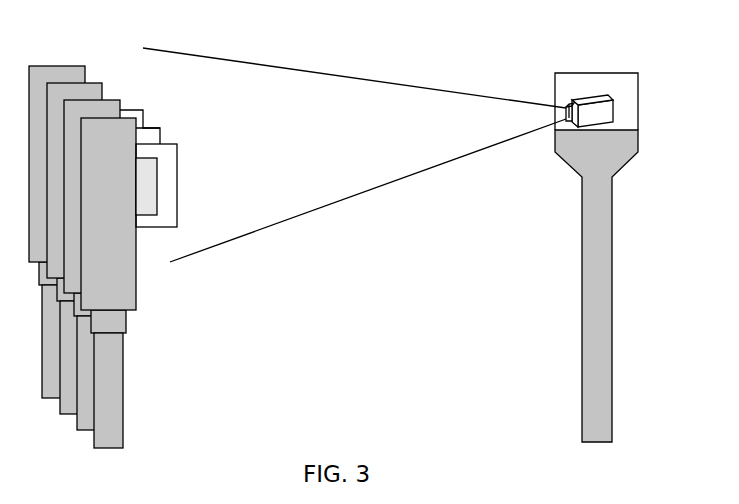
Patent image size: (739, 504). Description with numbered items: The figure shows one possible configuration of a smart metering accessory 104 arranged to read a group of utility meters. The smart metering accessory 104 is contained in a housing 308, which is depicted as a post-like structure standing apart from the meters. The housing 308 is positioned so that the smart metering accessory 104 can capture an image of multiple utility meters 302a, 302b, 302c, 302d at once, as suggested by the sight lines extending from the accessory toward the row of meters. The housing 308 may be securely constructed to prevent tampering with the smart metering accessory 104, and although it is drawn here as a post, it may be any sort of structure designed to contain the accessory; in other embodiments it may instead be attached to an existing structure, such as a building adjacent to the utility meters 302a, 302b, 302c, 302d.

The utility meter 302a is at (121, 118).
The utility meter 302b is at (103, 100).
The utility meter 302c is at (87, 83).
The utility meter 302d is at (70, 66).
The smart metering accessory 104 is at (605, 113).
The housing 308 is at (638, 137).